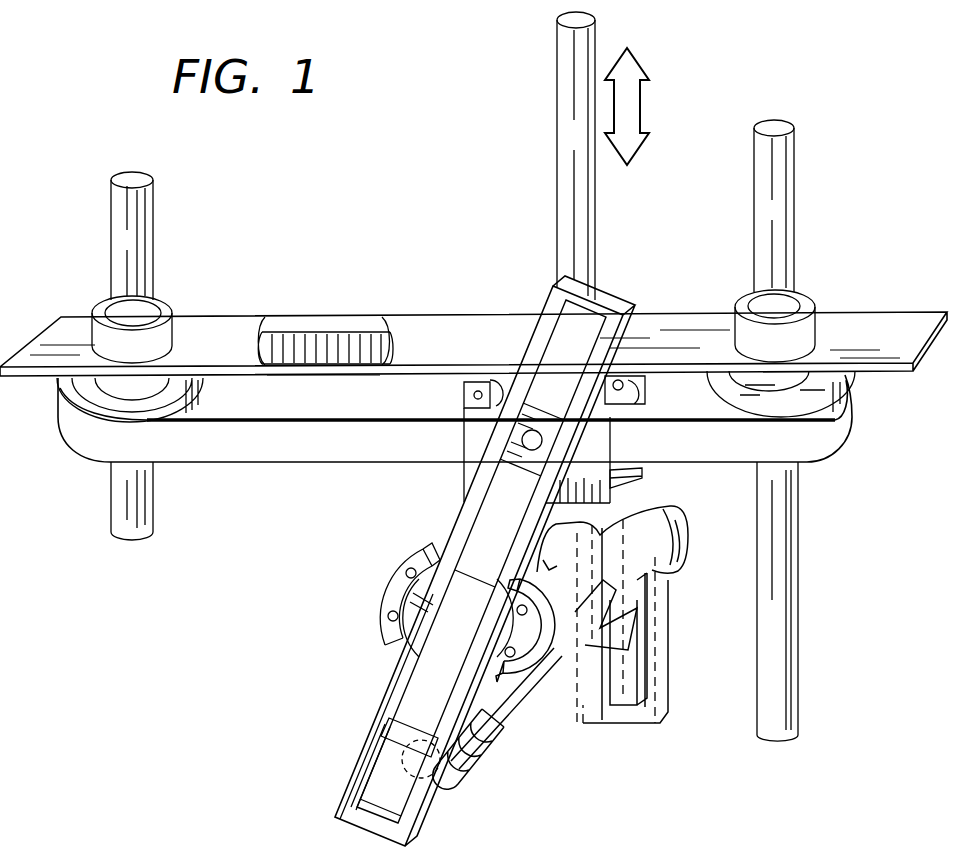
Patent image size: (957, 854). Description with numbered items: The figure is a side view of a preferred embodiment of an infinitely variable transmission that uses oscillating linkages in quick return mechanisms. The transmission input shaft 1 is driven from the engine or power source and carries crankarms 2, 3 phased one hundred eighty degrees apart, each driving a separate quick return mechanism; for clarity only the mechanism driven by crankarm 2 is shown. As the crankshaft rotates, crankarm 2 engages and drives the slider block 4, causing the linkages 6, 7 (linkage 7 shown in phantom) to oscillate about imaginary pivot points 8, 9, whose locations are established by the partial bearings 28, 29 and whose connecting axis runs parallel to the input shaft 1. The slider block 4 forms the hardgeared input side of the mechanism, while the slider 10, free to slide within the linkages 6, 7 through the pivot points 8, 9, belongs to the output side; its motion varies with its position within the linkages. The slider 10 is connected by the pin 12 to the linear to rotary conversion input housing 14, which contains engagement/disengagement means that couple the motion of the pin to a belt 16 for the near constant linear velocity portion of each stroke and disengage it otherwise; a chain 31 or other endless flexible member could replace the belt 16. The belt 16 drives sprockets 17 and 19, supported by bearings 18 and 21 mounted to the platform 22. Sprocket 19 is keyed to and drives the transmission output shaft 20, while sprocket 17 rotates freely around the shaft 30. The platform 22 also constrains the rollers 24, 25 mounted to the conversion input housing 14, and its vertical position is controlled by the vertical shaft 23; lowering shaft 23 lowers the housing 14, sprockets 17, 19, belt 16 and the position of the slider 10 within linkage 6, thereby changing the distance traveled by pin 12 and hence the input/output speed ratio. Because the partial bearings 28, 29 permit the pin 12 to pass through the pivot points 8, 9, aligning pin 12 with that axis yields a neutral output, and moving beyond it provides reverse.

The transmission input shaft 1 is at (500, 708).
The crankarm 2 is at (403, 748).
The crankarm 3 is at (633, 636).
The slider block 4 is at (397, 731).
The linkage 6 is at (393, 683).
The linkage 7 is at (663, 670).
The imaginary pivot point 8 is at (410, 657).
The imaginary pivot point 9 is at (670, 571).
The slider 10 is at (520, 458).
The pin 12 is at (522, 441).
The conversion input housing 14 is at (620, 480).
The belt 16 is at (300, 473).
The sprocket 17 is at (58, 387).
The bearing 18 is at (160, 307).
The sprocket 19 is at (848, 380).
The transmission output shaft 20 is at (795, 176).
The bearing 21 is at (808, 300).
The platform 22 is at (873, 316).
The vertical shaft 23 is at (600, 227).
The roller 24 is at (507, 372).
The roller 25 is at (640, 352).
The partial bearing 28 is at (385, 590).
The partial bearing 29 is at (683, 532).
The shaft 30 is at (155, 218).
The chain 31 is at (336, 330).